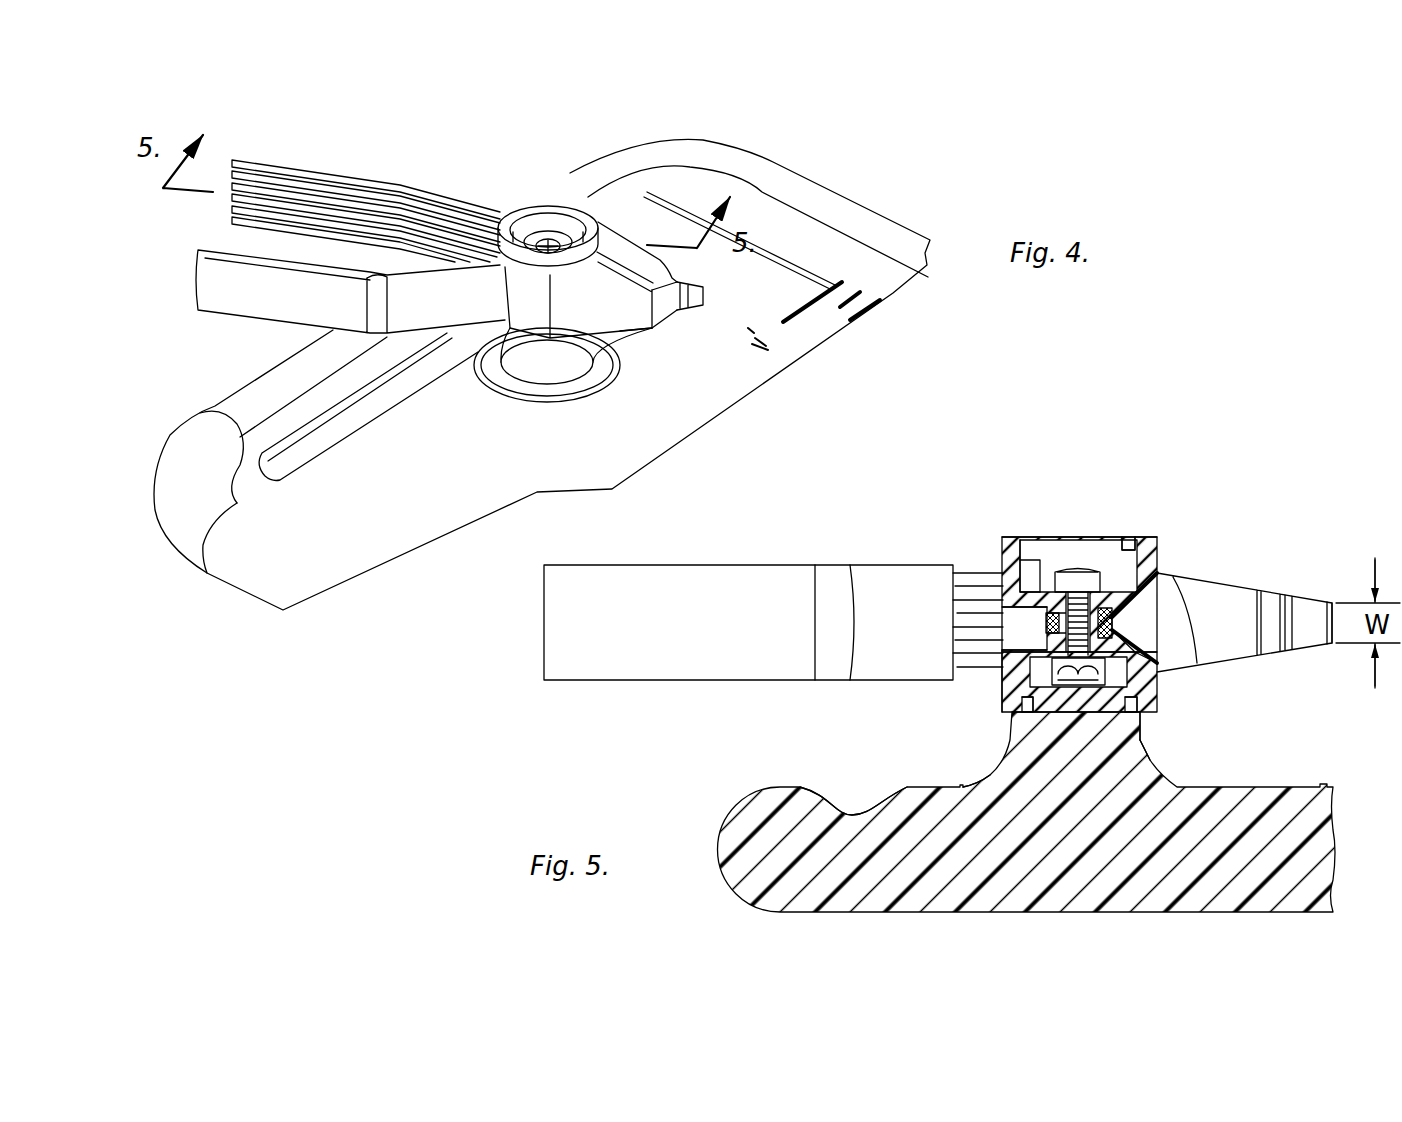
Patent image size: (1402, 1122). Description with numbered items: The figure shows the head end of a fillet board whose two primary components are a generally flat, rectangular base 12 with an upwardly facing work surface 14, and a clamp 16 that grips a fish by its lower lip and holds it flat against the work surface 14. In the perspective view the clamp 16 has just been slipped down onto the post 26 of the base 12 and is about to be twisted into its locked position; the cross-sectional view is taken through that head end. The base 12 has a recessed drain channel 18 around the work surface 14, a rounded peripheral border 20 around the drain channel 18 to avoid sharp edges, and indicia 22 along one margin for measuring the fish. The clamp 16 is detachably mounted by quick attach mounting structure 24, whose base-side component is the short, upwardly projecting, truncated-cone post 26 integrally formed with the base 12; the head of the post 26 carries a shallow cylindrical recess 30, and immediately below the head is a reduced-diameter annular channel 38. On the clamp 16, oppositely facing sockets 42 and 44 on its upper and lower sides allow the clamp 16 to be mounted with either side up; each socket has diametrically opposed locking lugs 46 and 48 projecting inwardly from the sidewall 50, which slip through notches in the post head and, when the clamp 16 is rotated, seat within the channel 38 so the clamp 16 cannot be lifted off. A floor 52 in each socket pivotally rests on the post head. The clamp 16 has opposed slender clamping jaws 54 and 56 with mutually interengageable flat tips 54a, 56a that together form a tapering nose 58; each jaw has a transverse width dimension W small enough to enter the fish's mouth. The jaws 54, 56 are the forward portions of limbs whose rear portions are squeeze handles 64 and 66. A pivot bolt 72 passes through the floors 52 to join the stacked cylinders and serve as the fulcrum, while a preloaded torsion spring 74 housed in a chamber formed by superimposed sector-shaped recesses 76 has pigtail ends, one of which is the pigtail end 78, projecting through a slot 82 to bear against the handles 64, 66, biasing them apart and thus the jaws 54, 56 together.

In FIG. 4, the base 12 is at (852, 182).
In FIG. 5, the base 12 is at (1316, 782).
In FIG. 4, the work surface 14 is at (624, 463).
In FIG. 4, the clamp 16 is at (438, 184).
In FIG. 5, the clamp 16 is at (970, 505).
In FIG. 4, the drain channel 18 is at (233, 463).
In FIG. 5, the drain channel 18 is at (855, 802).
In FIG. 4, the rounded peripheral border 20 is at (230, 567).
In FIG. 5, the rounded peripheral border 20 is at (738, 808).
In FIG. 4, the indicia 22 is at (828, 288).
In FIG. 4, the quick attach mounting structure 24 is at (508, 375).
In FIG. 5, the quick attach mounting structure 24 is at (1162, 735).
In FIG. 4, the post 26 is at (557, 380).
In FIG. 5, the post 26 is at (1160, 757).
In FIG. 5, the cylindrical recess 30 is at (1108, 692).
In FIG. 5, the annular channel 38 is at (1162, 712).
In FIG. 4, the socket 42 is at (550, 208).
In FIG. 5, the socket 42 is at (1162, 537).
In FIG. 4, the socket 44 is at (496, 352).
In FIG. 5, the socket 44 is at (1167, 693).
In FIG. 4, the locking lug 46 is at (578, 228).
In FIG. 5, the locking lug 46 is at (1126, 546).
In FIG. 4, the locking lug 48 is at (521, 230).
In FIG. 5, the locking lug 48 is at (1020, 707).
In FIG. 5, the sidewall 50 is at (1140, 537).
In FIG. 5, the floor 52 is at (1038, 588).
In FIG. 4, the clamping jaw 54 is at (630, 253).
In FIG. 5, the clamping jaw 54 is at (1240, 603).
In FIG. 4, the tip 54a is at (702, 277).
In FIG. 5, the tip 54a is at (1303, 603).
In FIG. 4, the clamping jaw 56 is at (610, 317).
In FIG. 4, the tip 56a is at (693, 302).
In FIG. 4, the tapering nose 58 is at (664, 332).
In FIG. 4, the squeeze handle 64 is at (293, 172).
In FIG. 5, the squeeze handle 64 is at (970, 573).
In FIG. 4, the squeeze handle 66 is at (223, 300).
In FIG. 5, the squeeze handle 66 is at (692, 577).
In FIG. 4, the pivot bolt 72 is at (541, 243).
In FIG. 5, the pivot bolt 72 is at (1076, 570).
In FIG. 5, the torsion spring 74 is at (1114, 618).
In FIG. 5, the sector-shaped recess 76 is at (1031, 607).
In FIG. 5, the pigtail end 78 is at (988, 613).
In FIG. 5, the slot 82 is at (1003, 630).